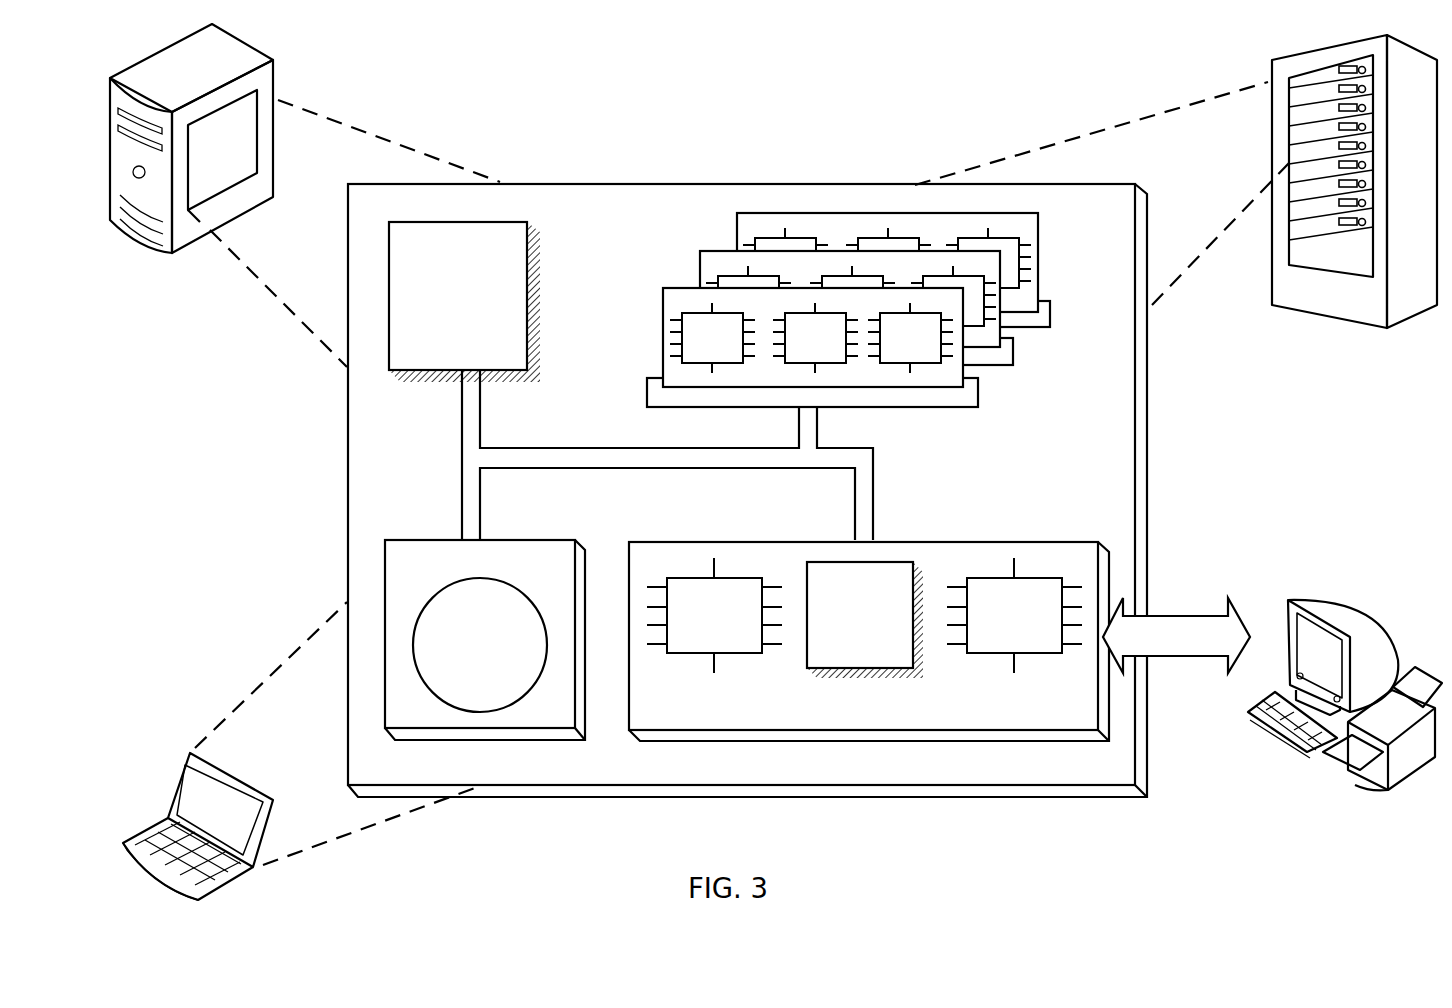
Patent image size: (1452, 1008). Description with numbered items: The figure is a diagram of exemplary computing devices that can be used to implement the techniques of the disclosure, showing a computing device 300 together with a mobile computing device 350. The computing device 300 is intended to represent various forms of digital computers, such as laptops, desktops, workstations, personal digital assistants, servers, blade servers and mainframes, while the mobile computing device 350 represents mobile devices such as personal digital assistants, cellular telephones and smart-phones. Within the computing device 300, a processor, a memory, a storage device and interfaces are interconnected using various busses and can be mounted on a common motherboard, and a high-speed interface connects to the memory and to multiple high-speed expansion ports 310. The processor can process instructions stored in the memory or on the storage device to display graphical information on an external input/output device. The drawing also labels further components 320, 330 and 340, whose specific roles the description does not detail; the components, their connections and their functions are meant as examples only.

The computing device 300 is at (703, 42).
The high-speed expansion ports 310 is at (512, 360).
The memory 320 is at (1040, 362).
The storage device 330 is at (559, 720).
The input/output devices 340 is at (1287, 606).
The mobile computing device 350 is at (665, 468).